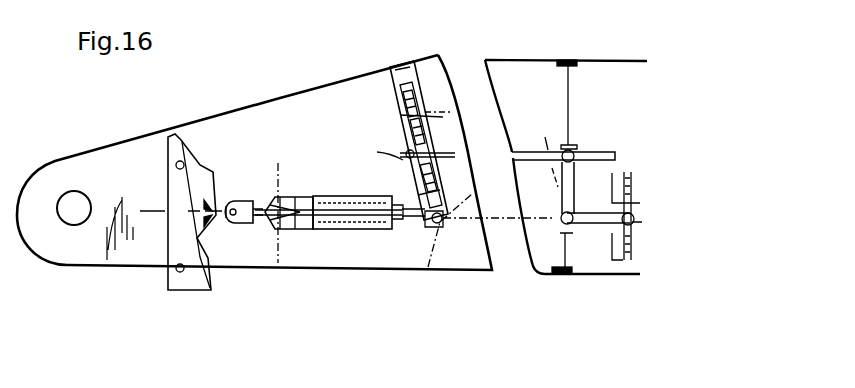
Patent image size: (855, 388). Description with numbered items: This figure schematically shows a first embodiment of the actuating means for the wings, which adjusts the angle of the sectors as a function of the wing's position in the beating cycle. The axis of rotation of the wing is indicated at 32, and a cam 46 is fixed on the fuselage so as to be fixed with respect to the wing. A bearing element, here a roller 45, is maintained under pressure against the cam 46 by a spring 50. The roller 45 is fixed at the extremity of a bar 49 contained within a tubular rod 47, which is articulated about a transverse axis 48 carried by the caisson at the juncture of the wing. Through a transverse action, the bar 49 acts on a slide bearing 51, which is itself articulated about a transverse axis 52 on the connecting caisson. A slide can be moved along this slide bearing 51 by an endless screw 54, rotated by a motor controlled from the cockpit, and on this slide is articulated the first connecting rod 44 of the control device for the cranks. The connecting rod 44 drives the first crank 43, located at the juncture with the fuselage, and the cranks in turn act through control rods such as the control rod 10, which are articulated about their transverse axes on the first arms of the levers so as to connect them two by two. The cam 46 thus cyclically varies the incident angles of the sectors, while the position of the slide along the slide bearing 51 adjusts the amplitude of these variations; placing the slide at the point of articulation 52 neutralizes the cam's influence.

The control rod 10 is at (614, 157).
The axis of rotation of the wing 32 is at (77, 225).
The first crank 43 is at (574, 188).
The first connecting rod 44 is at (512, 150).
The roller 45 is at (233, 198).
The cam 46 is at (217, 248).
The tubular rod 47 is at (312, 232).
The transverse axis 48 is at (280, 198).
The bar 49 is at (324, 195).
The spring 50 is at (353, 237).
The slide bearing 51 is at (393, 112).
The transverse axis 52 is at (420, 135).
The endless screw 54 is at (415, 112).